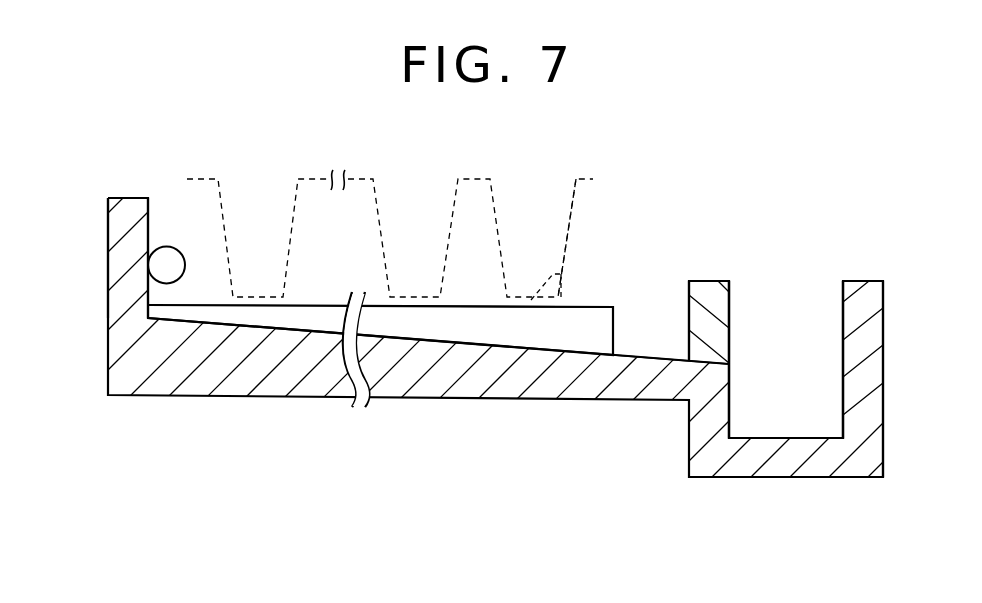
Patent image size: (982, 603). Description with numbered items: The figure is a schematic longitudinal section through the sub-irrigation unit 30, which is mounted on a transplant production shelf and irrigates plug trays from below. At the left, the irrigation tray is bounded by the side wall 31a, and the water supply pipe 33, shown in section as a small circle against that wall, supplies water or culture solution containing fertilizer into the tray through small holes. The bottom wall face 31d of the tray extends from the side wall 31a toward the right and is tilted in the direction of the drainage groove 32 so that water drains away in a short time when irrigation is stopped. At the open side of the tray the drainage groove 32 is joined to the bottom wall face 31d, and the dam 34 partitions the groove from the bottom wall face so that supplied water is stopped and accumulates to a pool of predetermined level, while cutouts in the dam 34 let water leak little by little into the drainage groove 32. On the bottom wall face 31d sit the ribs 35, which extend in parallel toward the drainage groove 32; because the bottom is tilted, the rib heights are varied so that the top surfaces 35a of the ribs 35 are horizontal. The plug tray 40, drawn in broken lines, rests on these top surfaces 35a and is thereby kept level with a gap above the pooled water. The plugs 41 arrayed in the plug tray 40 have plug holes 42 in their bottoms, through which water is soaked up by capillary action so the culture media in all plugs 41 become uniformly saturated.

The sub-irrigation unit 30 is at (196, 402).
The side wall 31a is at (127, 233).
The bottom wall face 31d is at (644, 357).
The drainage groove 32 is at (785, 417).
The water supply pipe 33 is at (160, 271).
The dam 34 is at (710, 292).
The rib 35 is at (573, 333).
The top surface of rib 35a is at (591, 306).
The plug tray 40 is at (578, 162).
The plug 41 is at (573, 222).
The plug hole 42 is at (561, 272).